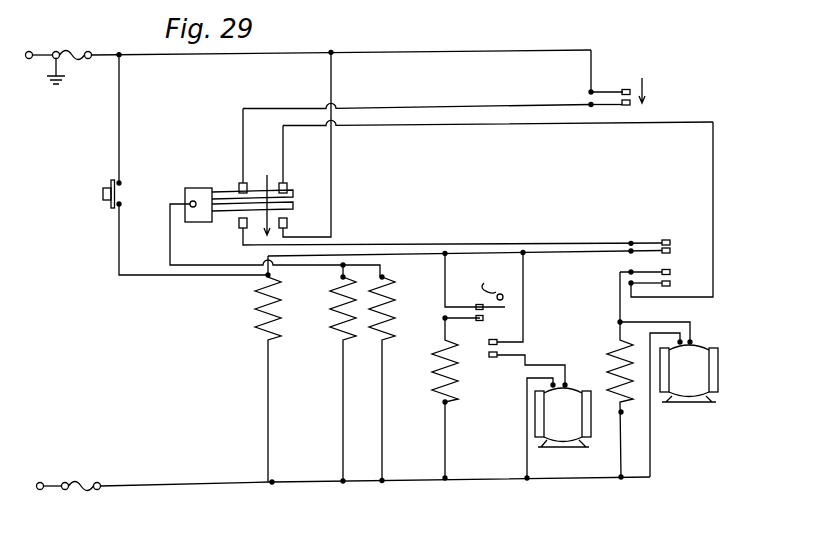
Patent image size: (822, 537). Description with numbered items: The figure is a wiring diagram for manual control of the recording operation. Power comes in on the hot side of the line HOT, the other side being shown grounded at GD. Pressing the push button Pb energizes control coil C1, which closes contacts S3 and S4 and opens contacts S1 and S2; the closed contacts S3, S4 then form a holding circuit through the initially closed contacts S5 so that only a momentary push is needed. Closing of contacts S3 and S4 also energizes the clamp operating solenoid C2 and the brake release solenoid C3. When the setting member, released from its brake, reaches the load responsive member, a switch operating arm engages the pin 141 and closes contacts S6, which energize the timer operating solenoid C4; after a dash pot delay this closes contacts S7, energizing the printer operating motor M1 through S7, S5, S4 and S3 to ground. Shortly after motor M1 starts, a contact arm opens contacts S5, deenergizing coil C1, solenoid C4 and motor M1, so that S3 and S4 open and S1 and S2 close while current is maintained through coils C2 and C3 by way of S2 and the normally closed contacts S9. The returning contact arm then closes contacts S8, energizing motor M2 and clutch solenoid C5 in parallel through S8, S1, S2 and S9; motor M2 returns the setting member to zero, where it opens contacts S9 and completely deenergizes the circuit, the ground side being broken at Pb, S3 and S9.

The ground GD is at (59, 75).
The hot side of the line HOT is at (69, 475).
The push button Pb is at (169, 165).
The contacts S1 is at (296, 160).
The contacts S2 is at (229, 151).
The contacts S3 is at (305, 144).
The contacts S4 is at (436, 232).
The contacts S5 is at (481, 243).
The contacts S6 is at (474, 286).
The contacts S7 is at (526, 318).
The contacts S8 is at (657, 279).
The contacts S9 is at (617, 78).
The pin 141 is at (495, 284).
The control coil C1 is at (257, 369).
The clamp operating solenoid C2 is at (327, 378).
The brake release solenoid C3 is at (390, 378).
The timer operating solenoid C4 is at (437, 399).
The clutch solenoid C5 is at (605, 375).
The printer operating motor M1 is at (558, 429).
The motor M2 is at (669, 399).